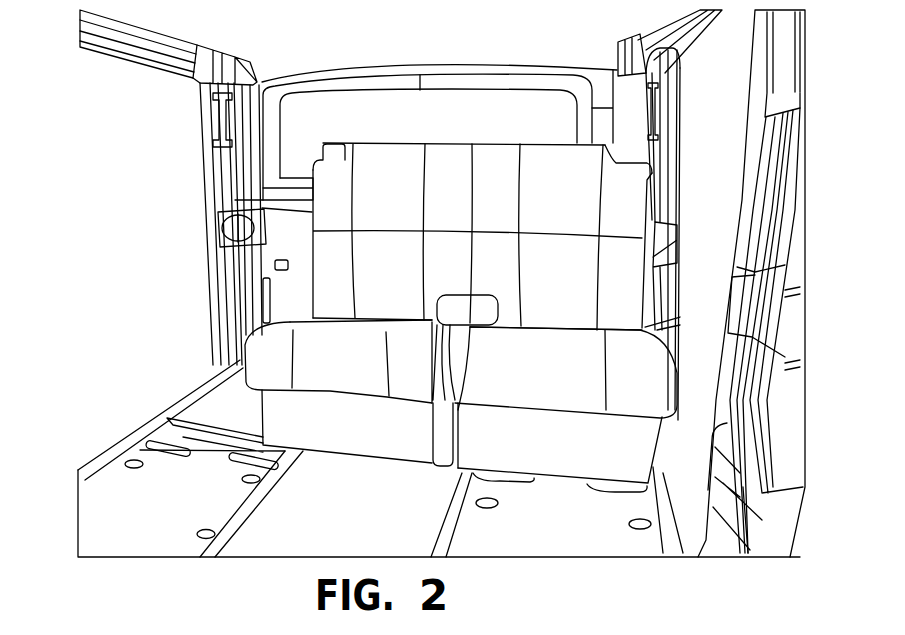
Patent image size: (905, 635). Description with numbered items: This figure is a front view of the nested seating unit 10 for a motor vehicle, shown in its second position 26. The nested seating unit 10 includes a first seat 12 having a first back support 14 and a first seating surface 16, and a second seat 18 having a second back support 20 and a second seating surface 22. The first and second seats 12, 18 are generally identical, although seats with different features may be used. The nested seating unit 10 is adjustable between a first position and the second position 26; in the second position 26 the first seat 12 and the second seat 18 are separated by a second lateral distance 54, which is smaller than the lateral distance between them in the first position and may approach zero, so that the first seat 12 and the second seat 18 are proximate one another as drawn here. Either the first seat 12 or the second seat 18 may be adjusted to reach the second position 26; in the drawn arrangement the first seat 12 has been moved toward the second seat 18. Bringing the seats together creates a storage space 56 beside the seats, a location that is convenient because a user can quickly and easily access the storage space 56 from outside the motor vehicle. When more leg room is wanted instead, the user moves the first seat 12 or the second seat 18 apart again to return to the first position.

The nested seating unit 10 is at (336, 54).
The first seat 12 is at (330, 253).
The first back support 14 is at (335, 194).
The first seating surface 16 is at (305, 330).
The second seat 18 is at (617, 225).
The second back support 20 is at (567, 187).
The second seating surface 22 is at (580, 360).
The second position 26 is at (511, 54).
The second lateral distance 54 is at (454, 400).
The storage space 56 is at (223, 412).